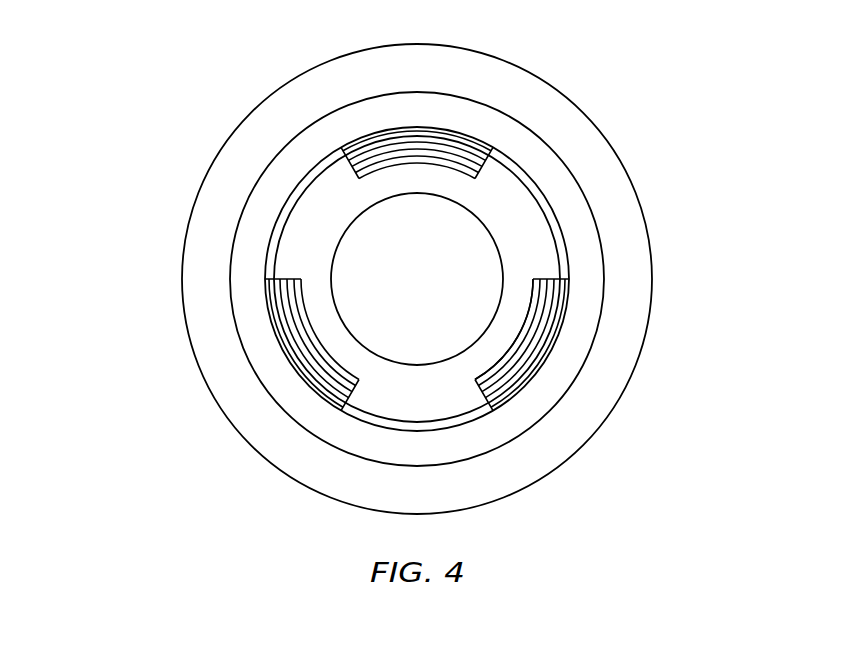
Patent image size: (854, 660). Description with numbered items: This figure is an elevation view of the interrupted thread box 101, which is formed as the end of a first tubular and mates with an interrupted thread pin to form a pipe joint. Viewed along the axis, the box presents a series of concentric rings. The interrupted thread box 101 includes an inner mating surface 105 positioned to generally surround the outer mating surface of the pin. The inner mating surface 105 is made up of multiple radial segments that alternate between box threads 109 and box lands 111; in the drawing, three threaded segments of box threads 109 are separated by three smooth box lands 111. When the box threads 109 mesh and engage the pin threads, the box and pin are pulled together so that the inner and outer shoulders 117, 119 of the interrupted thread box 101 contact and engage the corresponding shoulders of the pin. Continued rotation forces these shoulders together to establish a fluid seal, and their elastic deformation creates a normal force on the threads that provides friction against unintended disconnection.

The interrupted thread box 101 is at (168, 235).
The inner mating surface 105 is at (420, 170).
The box threads 109 is at (458, 148).
The box lands 111 is at (528, 212).
The inner shoulder 117 is at (492, 348).
The outer shoulder 119 is at (507, 430).